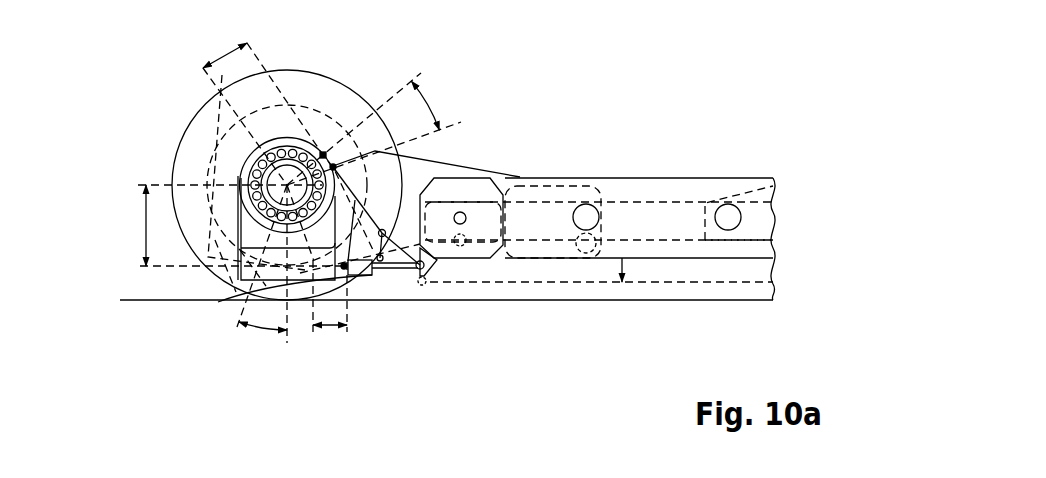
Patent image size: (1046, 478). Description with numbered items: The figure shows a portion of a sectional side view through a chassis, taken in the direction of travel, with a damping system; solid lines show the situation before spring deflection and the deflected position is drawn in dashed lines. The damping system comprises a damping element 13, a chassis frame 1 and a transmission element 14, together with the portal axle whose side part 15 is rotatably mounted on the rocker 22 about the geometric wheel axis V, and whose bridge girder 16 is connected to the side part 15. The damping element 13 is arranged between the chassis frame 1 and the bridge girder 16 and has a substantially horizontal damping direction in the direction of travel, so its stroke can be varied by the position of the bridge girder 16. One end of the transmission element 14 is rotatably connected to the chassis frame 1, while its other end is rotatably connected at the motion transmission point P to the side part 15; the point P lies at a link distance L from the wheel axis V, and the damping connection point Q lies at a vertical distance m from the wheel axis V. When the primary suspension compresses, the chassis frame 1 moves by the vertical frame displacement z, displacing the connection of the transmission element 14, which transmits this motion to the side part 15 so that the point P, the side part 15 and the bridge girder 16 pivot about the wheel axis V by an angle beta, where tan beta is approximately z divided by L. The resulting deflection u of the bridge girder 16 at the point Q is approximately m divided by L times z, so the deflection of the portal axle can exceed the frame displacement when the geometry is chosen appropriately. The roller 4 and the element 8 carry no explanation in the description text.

The chassis frame 1 is at (643, 190).
The wheel / roller 4 is at (187, 137).
The spring / lever 8 is at (230, 298).
The damping element 13 is at (395, 270).
The transmission element 14 is at (352, 200).
The side part 15 is at (323, 152).
The bridge girder 16 is at (278, 272).
The rocker 22 is at (478, 176).
The link distance L is at (225, 60).
The motion transmission point P is at (336, 163).
The geometric wheel axis V is at (245, 172).
The vertical distance m is at (145, 226).
The deflection of the bridge girder u is at (330, 340).
The vertical frame displacement z is at (622, 283).
The damping connection point Q is at (358, 277).
The angle β beta is at (260, 355).